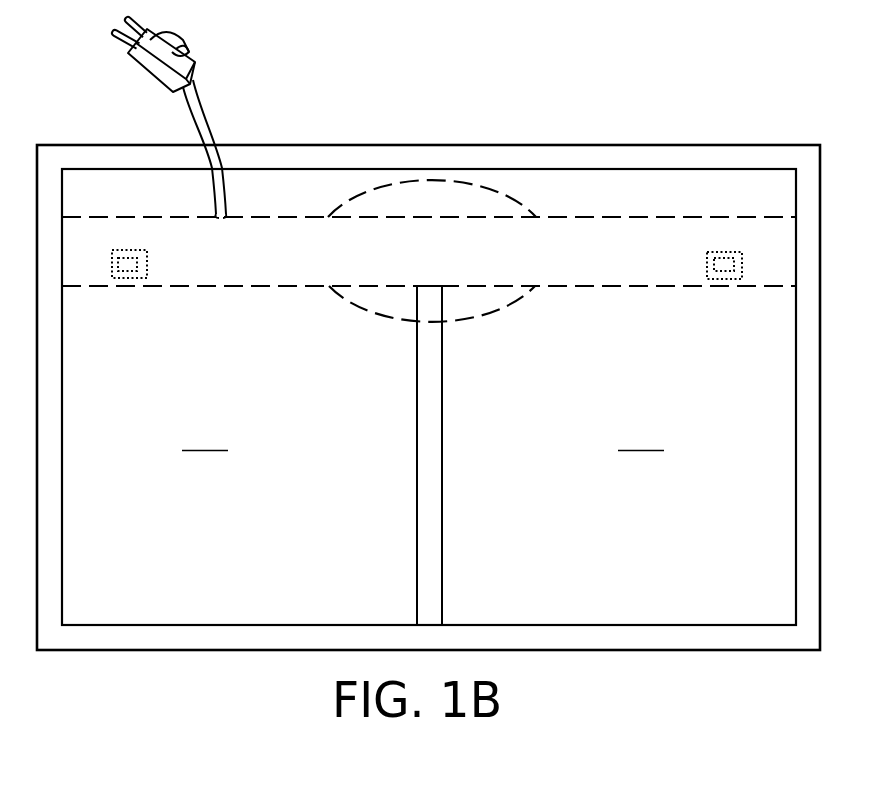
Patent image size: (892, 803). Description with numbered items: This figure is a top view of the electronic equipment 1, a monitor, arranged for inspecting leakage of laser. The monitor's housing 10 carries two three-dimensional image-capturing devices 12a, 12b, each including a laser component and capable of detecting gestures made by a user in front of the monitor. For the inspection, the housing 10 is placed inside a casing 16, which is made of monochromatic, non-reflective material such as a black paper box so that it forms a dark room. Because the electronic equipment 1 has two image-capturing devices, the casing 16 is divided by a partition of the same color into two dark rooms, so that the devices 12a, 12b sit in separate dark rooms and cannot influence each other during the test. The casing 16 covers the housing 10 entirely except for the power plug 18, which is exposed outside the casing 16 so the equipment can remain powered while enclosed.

The electronic equipment 1 is at (449, 116).
The housing 10 is at (613, 253).
The three-dimensional image-capturing device 12a is at (133, 257).
The three-dimensional image-capturing device 12b is at (718, 258).
The casing 16 is at (638, 158).
The power plug 18 is at (187, 68).